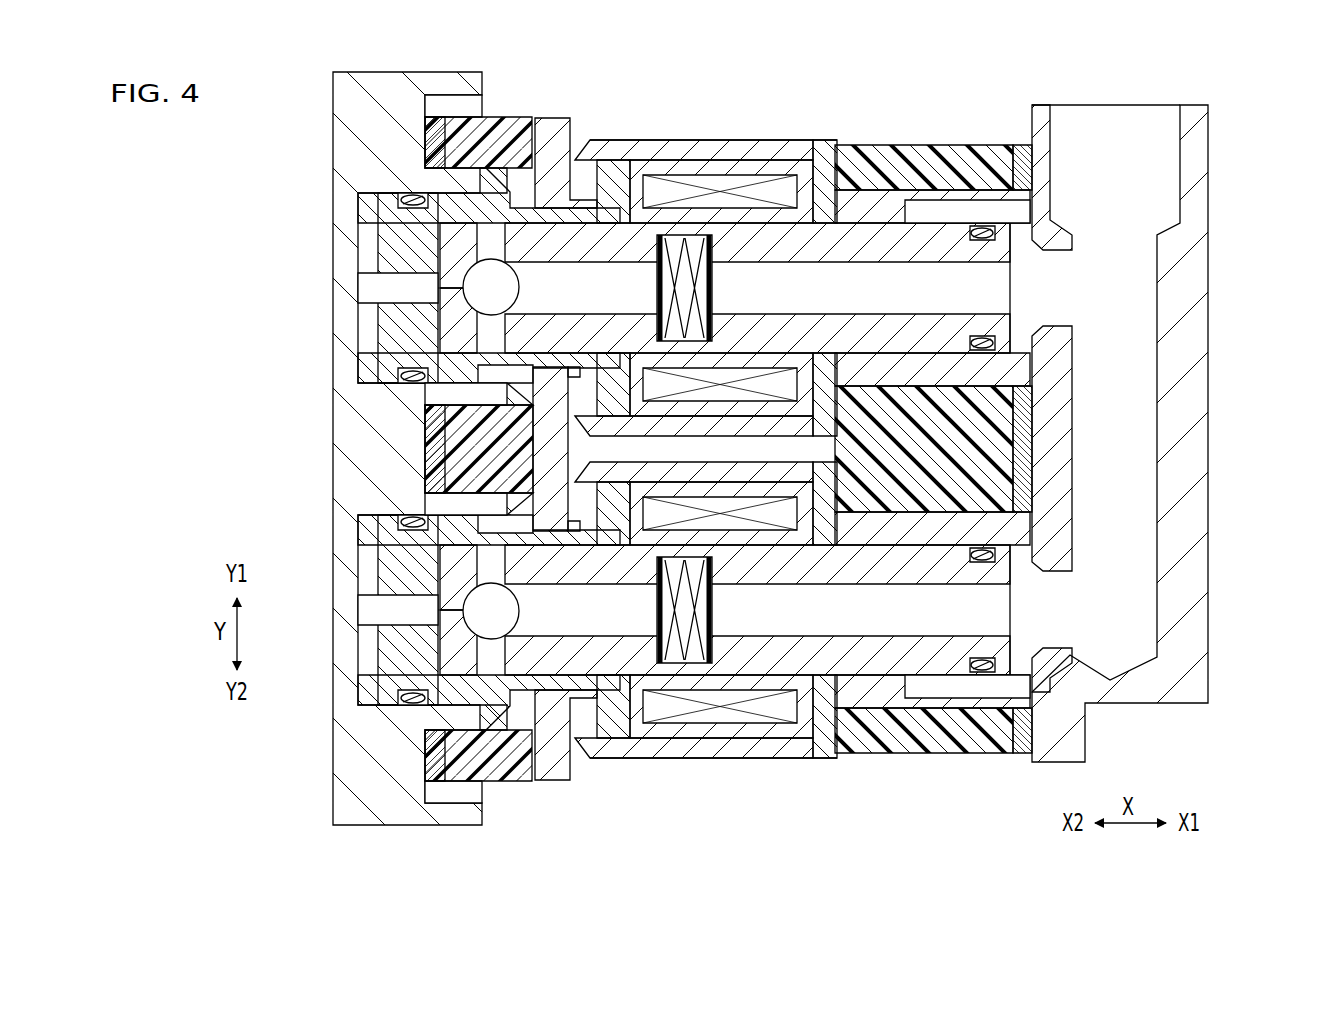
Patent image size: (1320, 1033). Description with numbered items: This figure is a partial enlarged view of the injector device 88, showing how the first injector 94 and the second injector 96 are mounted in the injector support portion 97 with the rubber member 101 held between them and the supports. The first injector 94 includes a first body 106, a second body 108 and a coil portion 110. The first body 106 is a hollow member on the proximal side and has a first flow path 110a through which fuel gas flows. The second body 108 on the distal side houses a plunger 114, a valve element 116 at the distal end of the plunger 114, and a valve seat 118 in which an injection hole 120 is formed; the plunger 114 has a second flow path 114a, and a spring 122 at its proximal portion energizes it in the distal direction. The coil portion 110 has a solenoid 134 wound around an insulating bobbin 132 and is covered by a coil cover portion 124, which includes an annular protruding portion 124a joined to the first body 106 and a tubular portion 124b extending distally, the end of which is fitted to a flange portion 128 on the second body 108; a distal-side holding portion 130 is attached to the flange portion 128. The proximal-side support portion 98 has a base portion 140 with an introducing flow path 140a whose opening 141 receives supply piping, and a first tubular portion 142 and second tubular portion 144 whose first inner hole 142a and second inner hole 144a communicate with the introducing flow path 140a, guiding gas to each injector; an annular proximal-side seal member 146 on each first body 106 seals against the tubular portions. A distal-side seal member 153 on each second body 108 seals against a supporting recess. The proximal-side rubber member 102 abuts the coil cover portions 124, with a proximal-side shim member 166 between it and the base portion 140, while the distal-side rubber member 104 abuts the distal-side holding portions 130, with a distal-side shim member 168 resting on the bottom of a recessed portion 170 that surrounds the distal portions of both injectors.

The injector device 88 is at (1220, 104).
The first injector 94 is at (706, 128).
The second injector 96 is at (658, 762).
The injector support portion 97 is at (1212, 178).
The proximal-side support portion 98 is at (1208, 703).
The rubber member 101 is at (883, 806).
The proximal-side rubber member 102 is at (897, 160).
The distal-side rubber member 104 is at (455, 138).
The first body 106 is at (925, 238).
The second body 108 is at (435, 172).
The coil portion 110 is at (722, 176).
The first flow path 110a is at (985, 282).
The plunger 114 is at (523, 240).
The second flow path 114a is at (593, 290).
The valve element 116 is at (455, 255).
The valve seat 118 is at (385, 240).
The injection hole 120 is at (385, 290).
The spring 122 is at (692, 286).
The coil cover portion 124 is at (870, 96).
The annular protruding portion 124a is at (830, 190).
The tubular portion 124b is at (795, 143).
The flange portion 128 is at (612, 190).
The distal-side holding portion 130 is at (545, 130).
The insulating bobbin 132 is at (655, 170).
The solenoid 134 is at (690, 195).
The base portion 140 is at (1195, 310).
The introducing flow path 140a is at (1140, 397).
The opening 141 is at (1143, 96).
The first tubular portion 142 is at (992, 212).
The first inner hole 142a is at (1030, 320).
The second tubular portion 144 is at (950, 690).
The second inner hole 144a is at (1030, 616).
The proximal-side seal member 146 is at (980, 235).
The distal-side seal member 153 is at (400, 200).
The proximal-side shim member 166 is at (1020, 162).
The distal-side shim member 168 is at (440, 145).
The recessed portion 170 is at (445, 107).